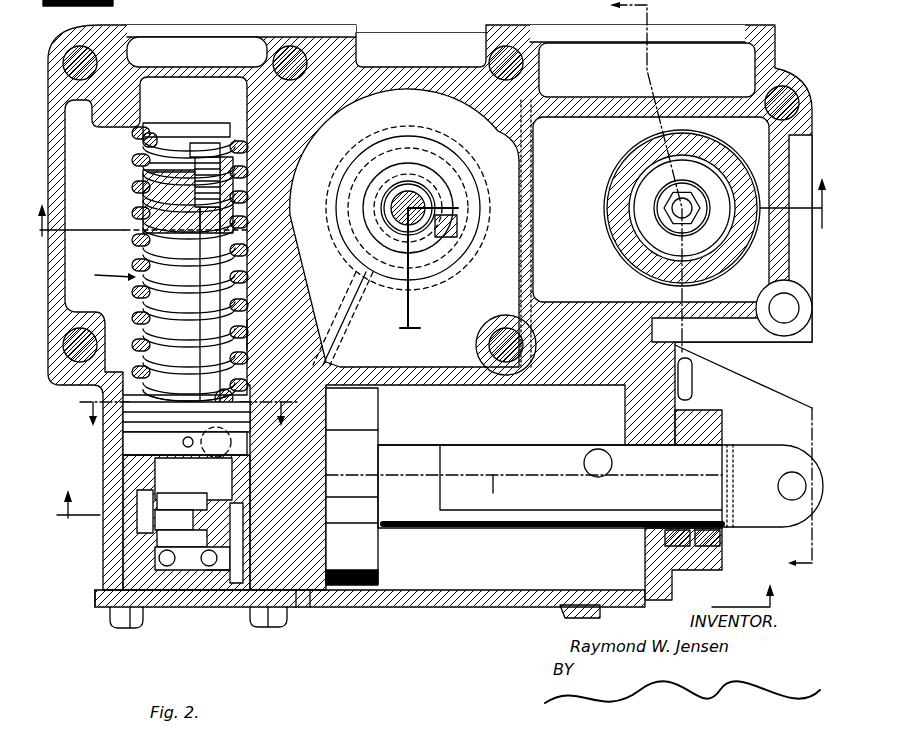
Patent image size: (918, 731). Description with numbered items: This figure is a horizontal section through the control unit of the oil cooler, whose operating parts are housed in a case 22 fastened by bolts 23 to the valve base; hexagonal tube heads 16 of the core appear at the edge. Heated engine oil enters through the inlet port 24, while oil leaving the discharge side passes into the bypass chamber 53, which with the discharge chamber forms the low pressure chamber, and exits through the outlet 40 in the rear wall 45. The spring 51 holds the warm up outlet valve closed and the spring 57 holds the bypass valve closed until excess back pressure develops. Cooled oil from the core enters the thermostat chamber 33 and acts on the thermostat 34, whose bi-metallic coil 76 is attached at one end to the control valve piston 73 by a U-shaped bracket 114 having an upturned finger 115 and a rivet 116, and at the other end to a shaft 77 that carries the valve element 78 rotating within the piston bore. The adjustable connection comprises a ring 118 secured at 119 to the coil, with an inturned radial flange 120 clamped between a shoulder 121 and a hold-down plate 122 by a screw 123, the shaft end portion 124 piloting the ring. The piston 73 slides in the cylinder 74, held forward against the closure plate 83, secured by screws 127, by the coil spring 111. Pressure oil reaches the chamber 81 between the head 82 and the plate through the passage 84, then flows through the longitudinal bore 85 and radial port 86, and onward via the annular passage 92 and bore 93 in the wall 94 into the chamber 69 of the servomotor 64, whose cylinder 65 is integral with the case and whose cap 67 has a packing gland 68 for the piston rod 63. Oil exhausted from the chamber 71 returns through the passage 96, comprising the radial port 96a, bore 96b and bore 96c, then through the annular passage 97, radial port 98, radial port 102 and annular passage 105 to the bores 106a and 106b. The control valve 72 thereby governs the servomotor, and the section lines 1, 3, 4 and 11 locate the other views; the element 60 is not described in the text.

The expanded hexagonal heads 16 is at (52, 9).
The case 22 is at (418, 66).
The outlet 40 is at (190, 34).
The rear wall 45 is at (386, 66).
The inlet port 24 is at (703, 34).
The bolts 23 is at (292, 44).
The thermostat chamber 33 is at (156, 236).
The bypass chamber 53 is at (651, 209).
The ring 118 is at (272, 158).
The spring 51 is at (446, 192).
The passage 84 is at (333, 342).
The spring 57 is at (648, 230).
The section line 3- 3 is at (702, 286).
The section line 1- 1 is at (430, 196).
The section line 11- 11 is at (185, 401).
The section line 4- 4 is at (415, 554).
The end portion 124 is at (172, 124).
The hold-down plate 122 is at (188, 124).
The screw 123 is at (205, 144).
The securing point 119 is at (142, 143).
The inturned radial flange 120 is at (150, 163).
The shoulder 121 is at (150, 172).
The shaft 77 is at (230, 275).
The bi-metallic coil 76 is at (140, 247).
The coil spring 111 is at (128, 292).
The thermostat 34 is at (106, 269).
The bore 106a is at (273, 335).
The upturned finger 115 is at (150, 458).
The rivet 116 is at (200, 384).
The U-shaped bracket 114 is at (123, 418).
The annular passage 97 is at (185, 442).
The radial port 98 is at (125, 450).
The bore 106b is at (147, 466).
The annular passage 105 is at (143, 522).
The radial port 102 is at (152, 542).
The annular passage 92 is at (160, 546).
The valve element 78 is at (165, 554).
The head 82 is at (150, 612).
The closure plate 83 is at (197, 610).
The chamber 81 is at (217, 608).
The piston 73 is at (123, 583).
The cylinder 65 is at (517, 588).
The cylinder 74 is at (110, 610).
The control valve 72 is at (130, 620).
The screws 127 is at (110, 624).
The bore 93 is at (297, 592).
The wall 94 is at (310, 600).
The head 60 is at (372, 412).
The chamber 69 is at (343, 560).
The bore 96c is at (308, 428).
The radial port 86 is at (316, 497).
The longitudinal bore 85 is at (320, 523).
The chamber 71 is at (501, 574).
The passage 96 is at (406, 492).
The bore 96b is at (498, 484).
The radial port 96a is at (594, 480).
The piston rod 63 is at (712, 466).
The packing gland 68 is at (692, 416).
The cap 67 is at (680, 372).
The servomotor 64 is at (732, 548).